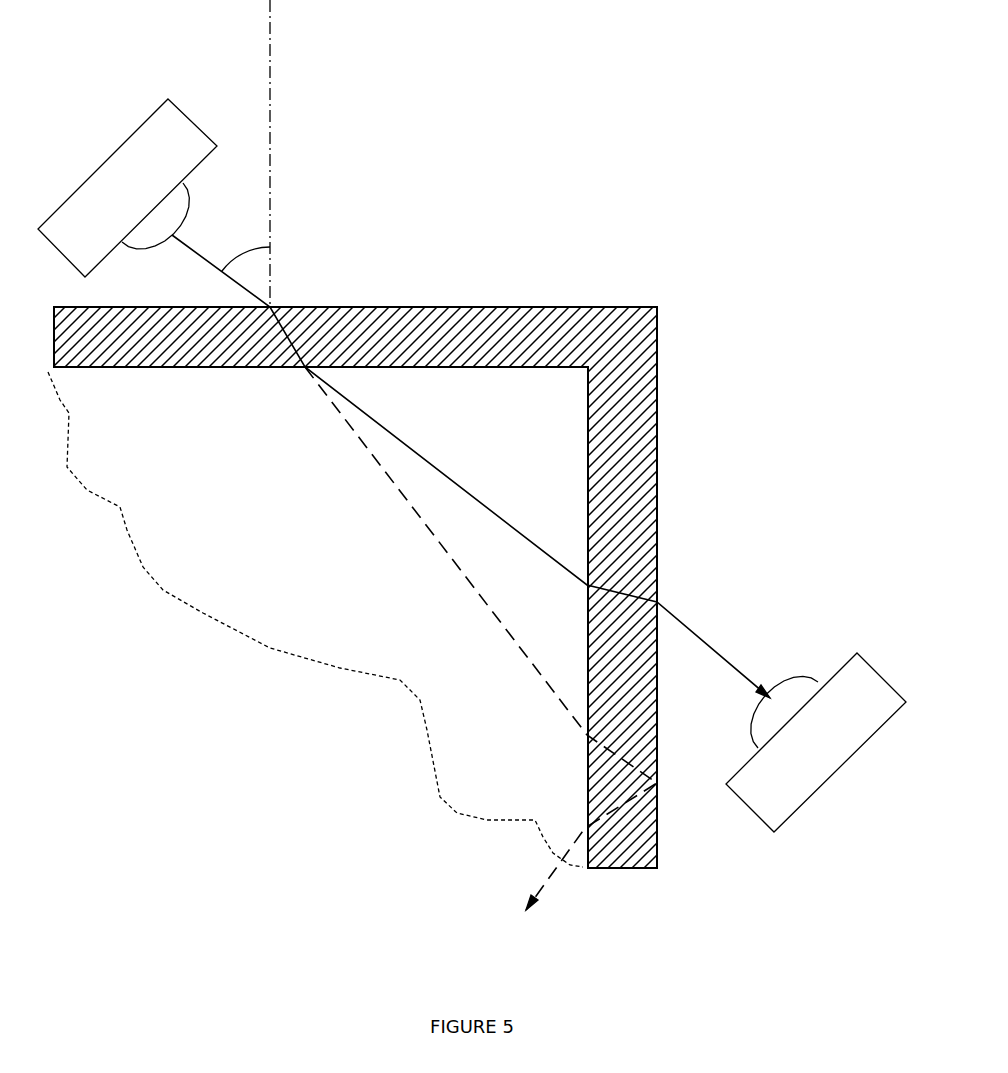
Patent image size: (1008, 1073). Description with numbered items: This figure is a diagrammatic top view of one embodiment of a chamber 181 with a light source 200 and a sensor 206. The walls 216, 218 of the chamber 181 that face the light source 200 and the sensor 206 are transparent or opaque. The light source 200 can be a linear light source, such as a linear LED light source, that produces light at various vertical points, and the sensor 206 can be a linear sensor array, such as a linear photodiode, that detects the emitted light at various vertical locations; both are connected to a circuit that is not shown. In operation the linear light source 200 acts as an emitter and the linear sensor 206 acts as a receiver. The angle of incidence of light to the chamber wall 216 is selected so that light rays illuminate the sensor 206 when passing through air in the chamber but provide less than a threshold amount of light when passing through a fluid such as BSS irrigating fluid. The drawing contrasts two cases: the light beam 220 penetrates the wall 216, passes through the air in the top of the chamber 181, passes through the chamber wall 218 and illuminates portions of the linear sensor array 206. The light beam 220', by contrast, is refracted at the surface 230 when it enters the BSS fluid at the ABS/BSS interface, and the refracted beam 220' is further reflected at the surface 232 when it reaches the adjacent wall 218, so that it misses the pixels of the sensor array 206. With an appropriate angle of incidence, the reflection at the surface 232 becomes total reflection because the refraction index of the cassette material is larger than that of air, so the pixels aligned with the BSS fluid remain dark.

The chamber 181 is at (315, 619).
The linear light source 200 is at (174, 135).
The linear sensor array 206 is at (787, 810).
The chamber wall 216 is at (352, 315).
The chamber wall 218 is at (612, 474).
The light beam 220 is at (471, 466).
The light beam 220' is at (481, 559).
The surface 230 is at (197, 367).
The surface 232 is at (657, 712).